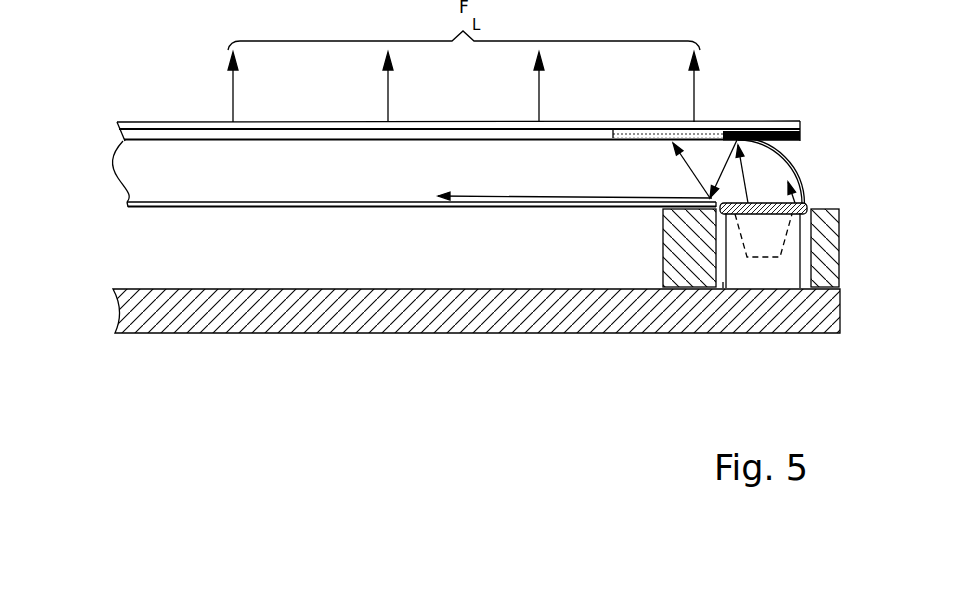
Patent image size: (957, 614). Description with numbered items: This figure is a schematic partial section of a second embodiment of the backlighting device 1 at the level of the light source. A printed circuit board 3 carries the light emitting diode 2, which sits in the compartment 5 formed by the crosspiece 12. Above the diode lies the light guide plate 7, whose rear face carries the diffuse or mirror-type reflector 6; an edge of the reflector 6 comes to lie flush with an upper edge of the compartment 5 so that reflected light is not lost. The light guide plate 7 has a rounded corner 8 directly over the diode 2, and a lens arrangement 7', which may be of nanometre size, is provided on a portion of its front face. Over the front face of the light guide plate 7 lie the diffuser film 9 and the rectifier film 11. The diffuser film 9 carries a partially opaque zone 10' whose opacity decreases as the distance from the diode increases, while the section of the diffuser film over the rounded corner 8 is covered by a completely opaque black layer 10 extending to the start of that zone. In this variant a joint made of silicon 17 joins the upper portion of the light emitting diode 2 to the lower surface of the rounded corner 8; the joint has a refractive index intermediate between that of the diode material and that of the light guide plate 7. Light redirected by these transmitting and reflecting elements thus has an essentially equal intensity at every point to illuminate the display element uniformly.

The backlighting device 1 is at (789, 73).
The light emitting diode 2 is at (795, 238).
The printed circuit board 3 is at (792, 317).
The compartment 5 is at (723, 283).
The reflector 6 is at (150, 207).
The light guide plate 7 is at (77, 171).
The lens arrangement 7' is at (425, 145).
The rounded corner 8 is at (683, 198).
The diffuser film 9 is at (130, 137).
The completely opaque black layer 10 is at (794, 118).
The partially opaque zone 10' is at (682, 108).
The rectifier film 11 is at (160, 128).
The crosspiece 12 is at (822, 277).
The joint made of silicon 17 is at (807, 206).